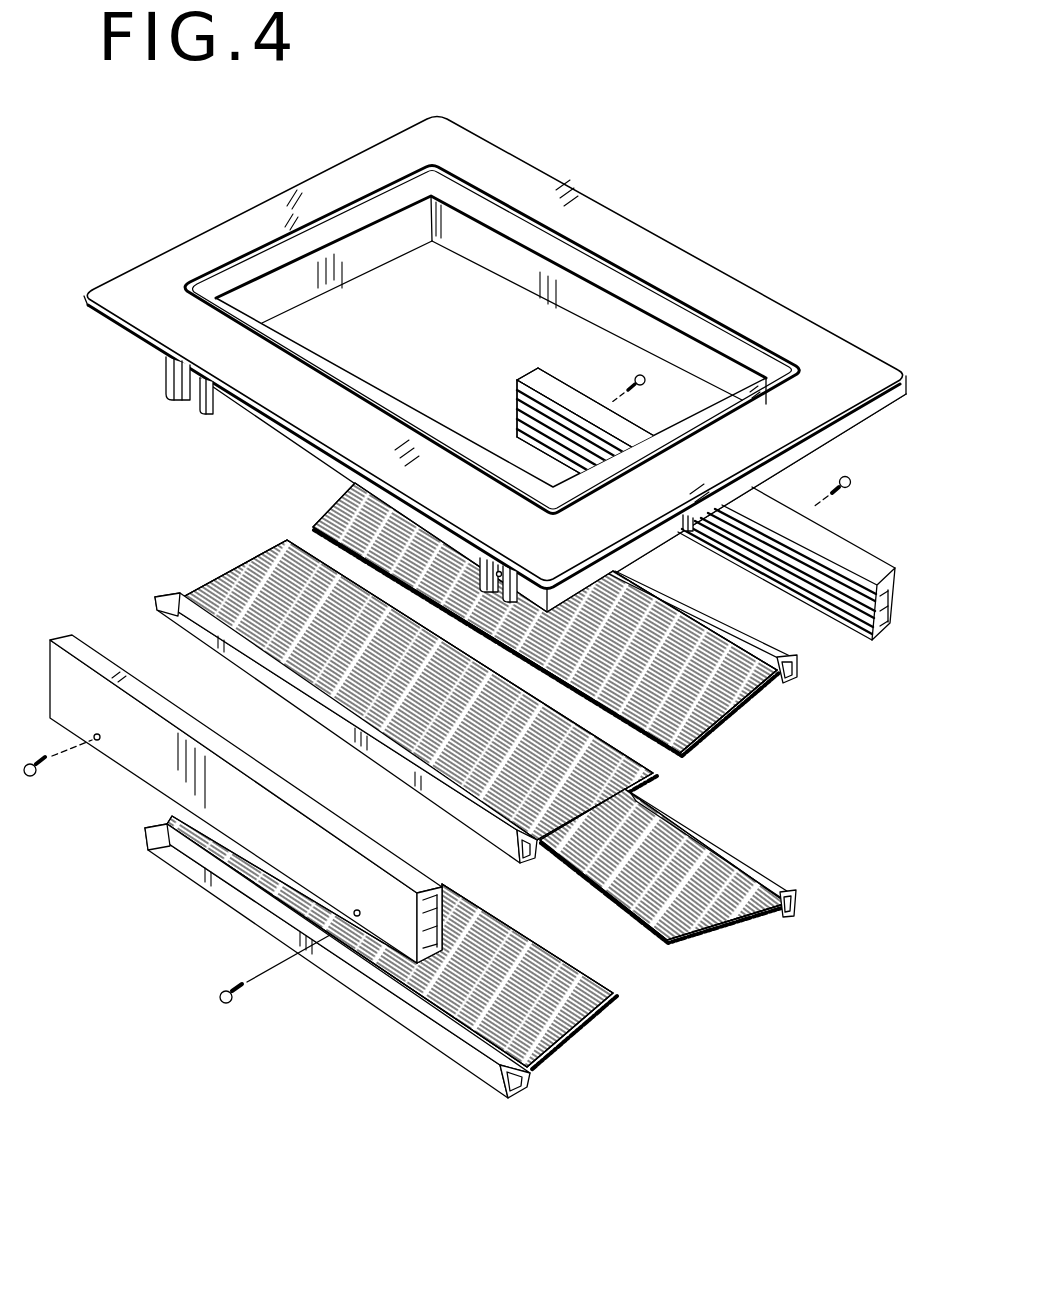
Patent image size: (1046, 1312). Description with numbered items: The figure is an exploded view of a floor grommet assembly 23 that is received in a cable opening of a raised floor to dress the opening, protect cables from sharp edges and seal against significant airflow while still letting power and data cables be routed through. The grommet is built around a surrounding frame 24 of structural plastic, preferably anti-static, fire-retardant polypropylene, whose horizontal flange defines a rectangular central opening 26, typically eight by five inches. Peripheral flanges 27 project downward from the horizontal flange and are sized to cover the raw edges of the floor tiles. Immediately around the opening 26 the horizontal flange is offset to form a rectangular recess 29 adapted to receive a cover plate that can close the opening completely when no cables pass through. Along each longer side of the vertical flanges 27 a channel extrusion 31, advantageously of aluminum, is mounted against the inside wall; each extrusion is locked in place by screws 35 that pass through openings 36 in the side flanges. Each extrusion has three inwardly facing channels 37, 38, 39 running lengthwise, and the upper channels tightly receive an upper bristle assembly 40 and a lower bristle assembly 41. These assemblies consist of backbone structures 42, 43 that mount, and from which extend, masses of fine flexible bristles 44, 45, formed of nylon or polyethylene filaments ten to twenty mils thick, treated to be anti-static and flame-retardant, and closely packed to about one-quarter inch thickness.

The floor grommet assembly 23 is at (495, 348).
The surrounding frame 24 is at (528, 183).
The rectangular central opening 26 is at (655, 305).
The peripheral flanges 27 is at (250, 420).
The rectangular recess 29 is at (722, 337).
The channel extrusion 31 is at (475, 693).
The screw 35 is at (38, 780).
The opening 36 is at (187, 402).
The channel 37 is at (900, 600).
The channel 38 is at (748, 718).
The channel 39 is at (838, 625).
The upper bristle assembly 40 is at (748, 718).
The lower bristle assembly 41 is at (570, 1054).
The backbone structure 42 is at (745, 640).
The backbone structure 43 is at (765, 888).
The bristles 44 is at (469, 663).
The bristles 45 is at (683, 942).